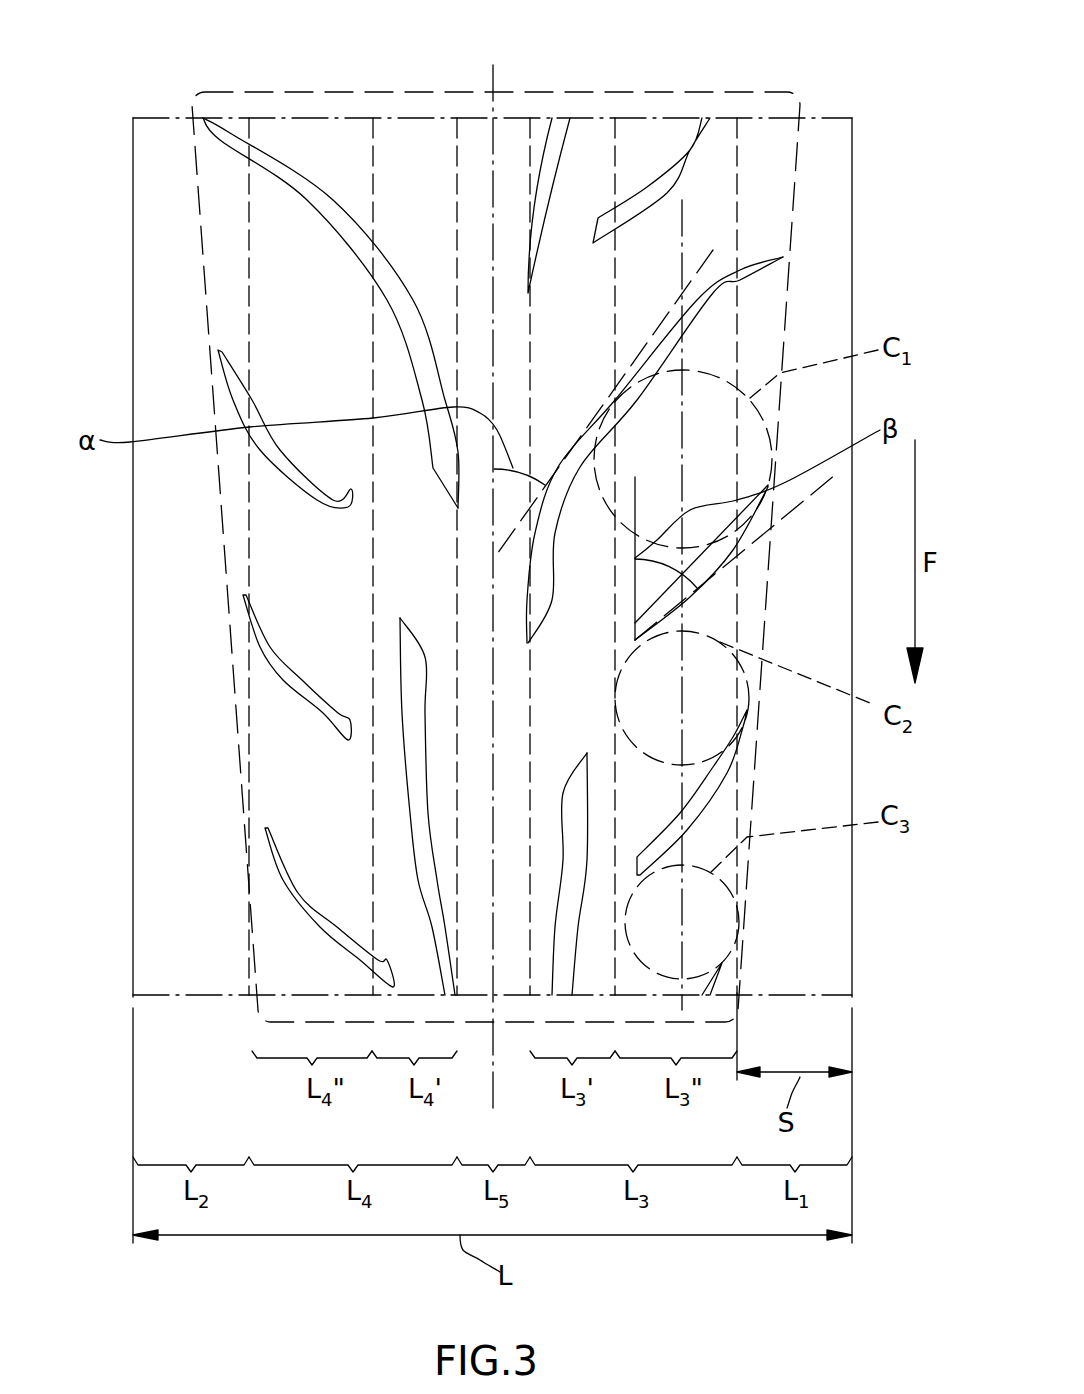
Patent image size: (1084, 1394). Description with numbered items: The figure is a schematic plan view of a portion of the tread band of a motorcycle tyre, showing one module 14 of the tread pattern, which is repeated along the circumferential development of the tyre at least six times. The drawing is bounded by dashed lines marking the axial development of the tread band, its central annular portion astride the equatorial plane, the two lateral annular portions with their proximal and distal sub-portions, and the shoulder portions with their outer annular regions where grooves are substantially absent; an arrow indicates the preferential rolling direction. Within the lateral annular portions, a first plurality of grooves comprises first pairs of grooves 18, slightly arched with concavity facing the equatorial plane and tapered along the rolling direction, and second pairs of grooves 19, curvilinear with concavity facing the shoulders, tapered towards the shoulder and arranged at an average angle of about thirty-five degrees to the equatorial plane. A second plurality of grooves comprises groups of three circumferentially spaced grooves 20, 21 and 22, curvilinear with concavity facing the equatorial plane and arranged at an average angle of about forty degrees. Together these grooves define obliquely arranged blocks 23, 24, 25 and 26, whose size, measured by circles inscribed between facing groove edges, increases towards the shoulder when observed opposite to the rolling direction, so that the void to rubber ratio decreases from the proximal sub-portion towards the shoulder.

The module 14 is at (367, 90).
The first pairs of grooves 18 is at (563, 792).
The second pairs of grooves 19 is at (227, 133).
The groove 20 is at (228, 372).
The groove 21 is at (263, 643).
The groove 22 is at (290, 883).
The block 23 is at (298, 320).
The block 24 is at (298, 587).
The block 25 is at (298, 827).
The block 26 is at (628, 268).